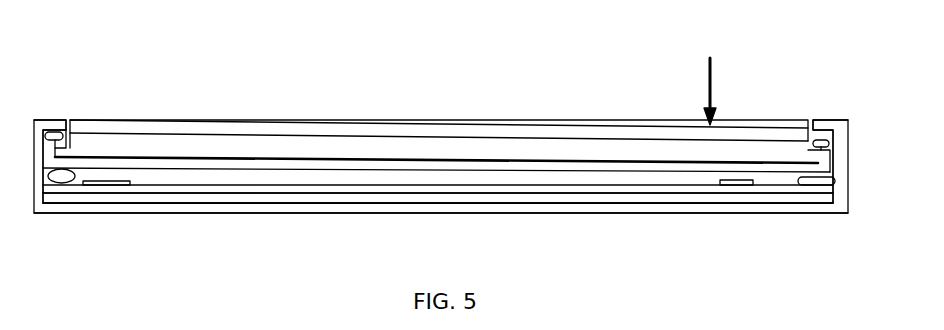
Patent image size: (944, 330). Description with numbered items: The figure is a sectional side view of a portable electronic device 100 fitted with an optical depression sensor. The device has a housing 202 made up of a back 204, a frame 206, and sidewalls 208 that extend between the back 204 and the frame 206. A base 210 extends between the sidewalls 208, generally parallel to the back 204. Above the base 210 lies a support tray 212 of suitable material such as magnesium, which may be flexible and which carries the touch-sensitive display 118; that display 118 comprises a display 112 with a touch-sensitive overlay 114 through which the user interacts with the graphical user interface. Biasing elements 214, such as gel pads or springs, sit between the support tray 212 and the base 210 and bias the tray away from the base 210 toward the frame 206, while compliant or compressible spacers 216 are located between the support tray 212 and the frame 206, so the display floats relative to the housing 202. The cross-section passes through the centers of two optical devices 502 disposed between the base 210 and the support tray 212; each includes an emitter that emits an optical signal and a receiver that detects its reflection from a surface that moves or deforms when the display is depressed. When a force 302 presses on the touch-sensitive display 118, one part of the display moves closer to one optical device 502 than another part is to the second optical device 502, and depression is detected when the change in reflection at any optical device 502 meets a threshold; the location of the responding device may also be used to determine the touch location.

The portable electronic device 100 is at (630, 88).
The display 112 is at (390, 137).
The touch-sensitive overlay 114 is at (488, 127).
The touch-sensitive display 118 is at (316, 122).
The housing 202 is at (617, 212).
The back 204 is at (541, 207).
The frame 206 is at (46, 119).
The sidewalls 208 is at (840, 194).
The base 210 is at (302, 187).
The support tray 212 is at (232, 160).
The biasing elements 214 is at (808, 181).
The compliant spacers 216 is at (821, 139).
The force 302 is at (716, 76).
The optical devices 502 is at (107, 184).